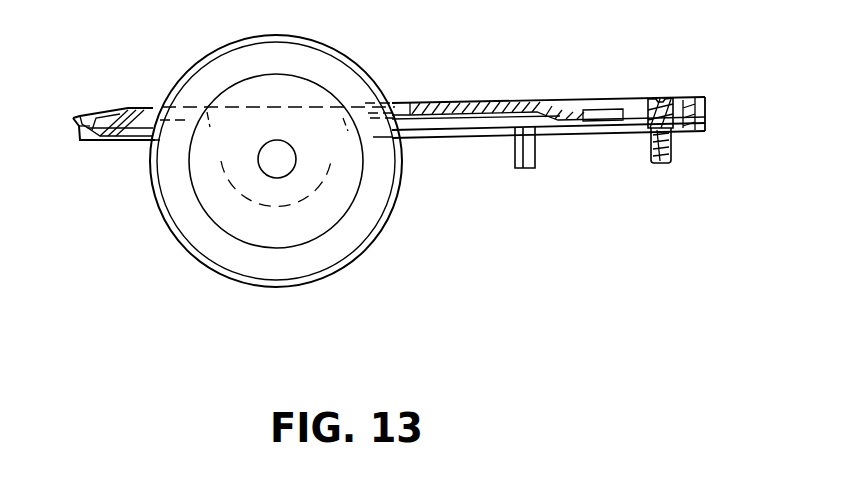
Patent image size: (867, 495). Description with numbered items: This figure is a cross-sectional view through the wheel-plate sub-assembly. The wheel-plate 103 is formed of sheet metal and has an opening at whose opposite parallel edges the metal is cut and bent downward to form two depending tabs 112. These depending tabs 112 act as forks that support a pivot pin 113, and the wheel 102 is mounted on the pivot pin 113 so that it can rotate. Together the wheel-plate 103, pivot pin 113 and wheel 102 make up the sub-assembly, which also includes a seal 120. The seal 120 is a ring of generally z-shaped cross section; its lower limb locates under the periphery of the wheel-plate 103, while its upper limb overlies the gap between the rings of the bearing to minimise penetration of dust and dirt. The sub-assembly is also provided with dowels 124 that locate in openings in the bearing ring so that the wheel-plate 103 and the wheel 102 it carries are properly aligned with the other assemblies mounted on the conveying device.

The wheel 102 is at (356, 242).
The wheel-plate 103 is at (481, 101).
The depending tabs 112 is at (338, 166).
The pivot pin 113 is at (241, 192).
The seal 120 is at (703, 115).
The dowels 124 is at (534, 160).